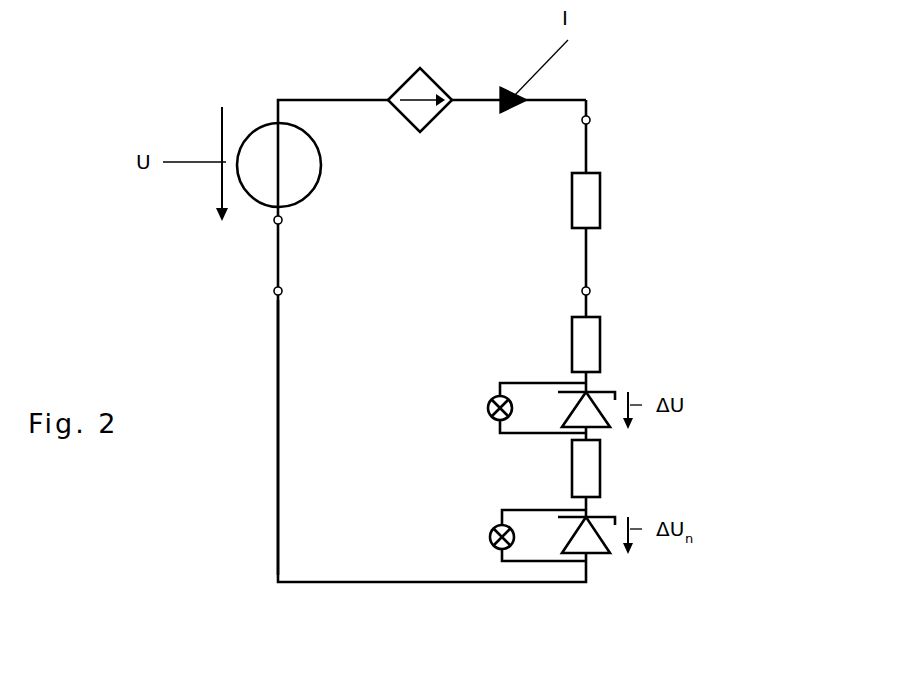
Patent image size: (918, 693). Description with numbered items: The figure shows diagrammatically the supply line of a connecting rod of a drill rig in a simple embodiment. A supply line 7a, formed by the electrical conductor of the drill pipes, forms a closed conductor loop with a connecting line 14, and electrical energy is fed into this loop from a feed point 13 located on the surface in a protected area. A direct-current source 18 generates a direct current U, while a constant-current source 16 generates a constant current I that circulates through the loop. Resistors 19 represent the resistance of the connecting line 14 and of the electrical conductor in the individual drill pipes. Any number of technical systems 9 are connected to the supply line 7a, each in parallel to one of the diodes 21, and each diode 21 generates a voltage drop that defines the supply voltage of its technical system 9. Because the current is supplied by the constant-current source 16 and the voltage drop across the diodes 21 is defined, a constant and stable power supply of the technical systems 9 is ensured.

The supply line 7a is at (277, 497).
The direct-current source 18 is at (250, 135).
The constant-current source 16 is at (435, 85).
The feed point 13 is at (591, 119).
The connecting line 14 is at (587, 253).
The resistors 19 is at (600, 200).
The diodes 21 is at (568, 532).
The technical systems 9 is at (490, 537).